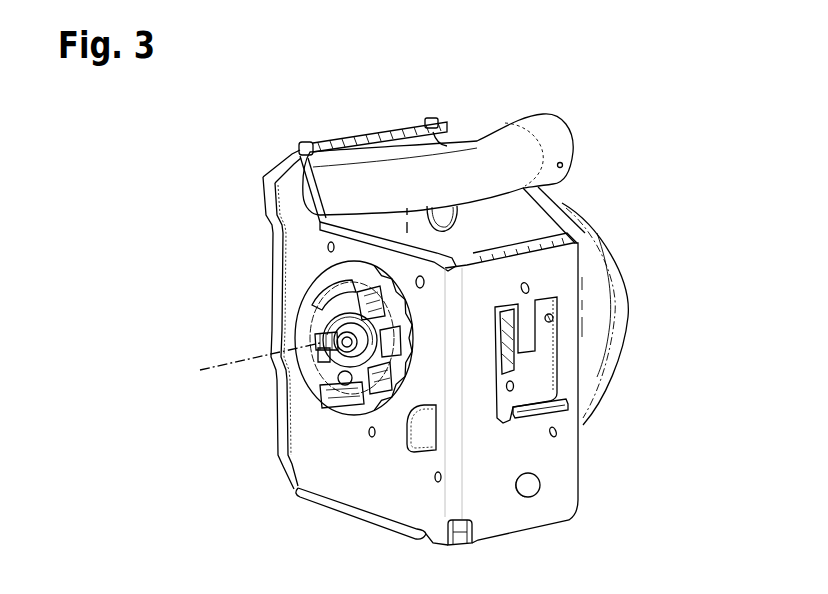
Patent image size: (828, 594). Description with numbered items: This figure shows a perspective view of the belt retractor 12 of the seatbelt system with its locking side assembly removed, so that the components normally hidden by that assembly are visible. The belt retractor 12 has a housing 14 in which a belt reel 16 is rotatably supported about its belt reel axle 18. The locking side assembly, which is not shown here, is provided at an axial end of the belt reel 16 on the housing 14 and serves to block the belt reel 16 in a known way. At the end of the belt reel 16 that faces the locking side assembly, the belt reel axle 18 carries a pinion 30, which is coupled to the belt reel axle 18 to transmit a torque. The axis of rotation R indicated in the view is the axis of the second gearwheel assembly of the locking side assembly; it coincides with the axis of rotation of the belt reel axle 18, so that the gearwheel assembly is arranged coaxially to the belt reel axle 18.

The belt retractor 12 is at (266, 157).
The housing 14 is at (553, 450).
The belt reel 16 is at (510, 356).
The belt reel axle 18 is at (320, 340).
The pinion 30 is at (340, 354).
The axis of rotation R is at (203, 370).